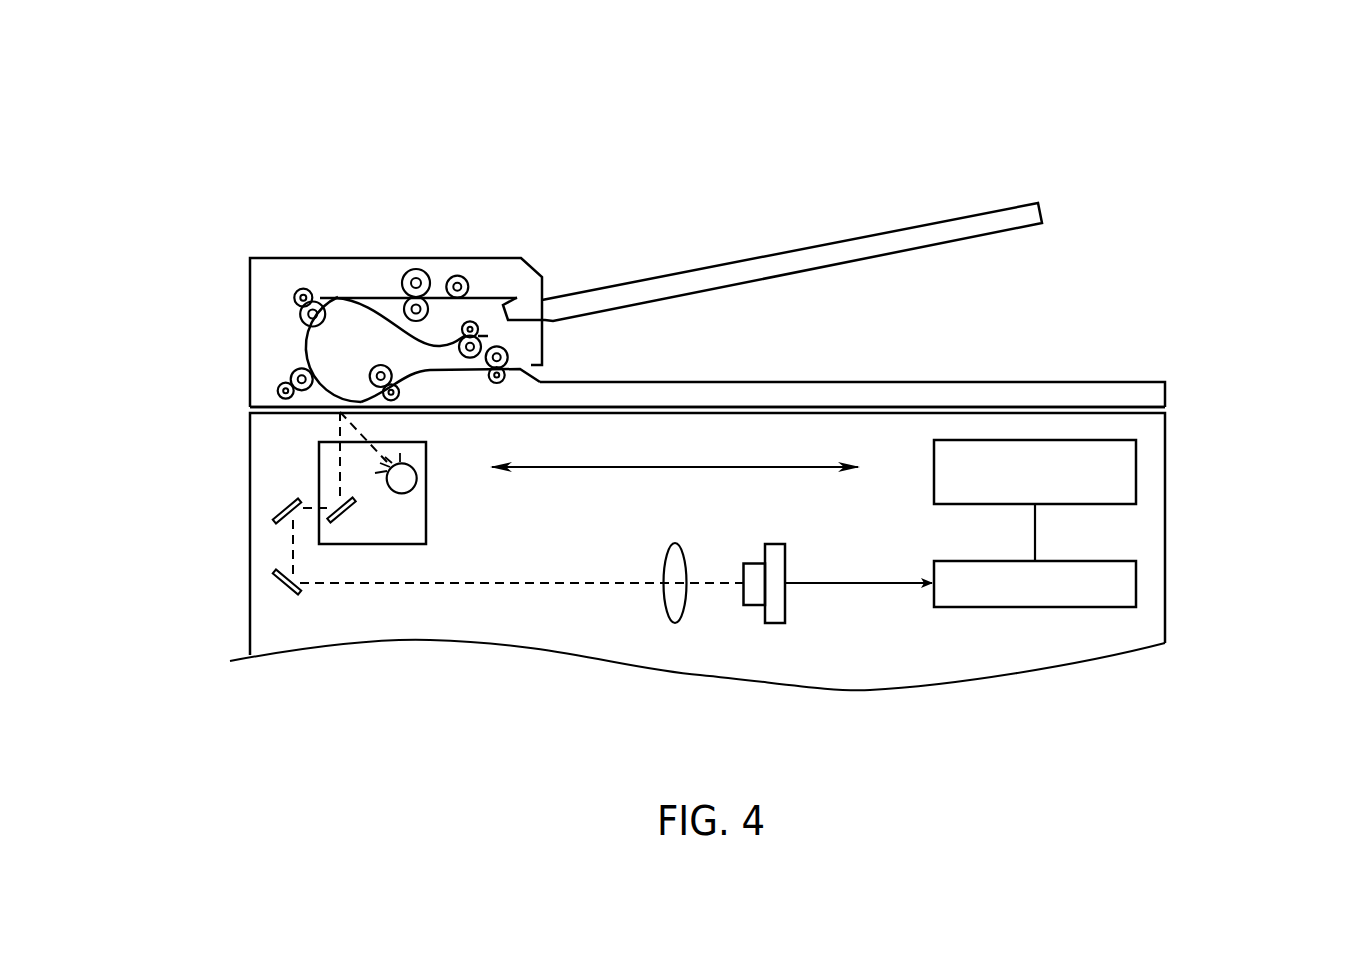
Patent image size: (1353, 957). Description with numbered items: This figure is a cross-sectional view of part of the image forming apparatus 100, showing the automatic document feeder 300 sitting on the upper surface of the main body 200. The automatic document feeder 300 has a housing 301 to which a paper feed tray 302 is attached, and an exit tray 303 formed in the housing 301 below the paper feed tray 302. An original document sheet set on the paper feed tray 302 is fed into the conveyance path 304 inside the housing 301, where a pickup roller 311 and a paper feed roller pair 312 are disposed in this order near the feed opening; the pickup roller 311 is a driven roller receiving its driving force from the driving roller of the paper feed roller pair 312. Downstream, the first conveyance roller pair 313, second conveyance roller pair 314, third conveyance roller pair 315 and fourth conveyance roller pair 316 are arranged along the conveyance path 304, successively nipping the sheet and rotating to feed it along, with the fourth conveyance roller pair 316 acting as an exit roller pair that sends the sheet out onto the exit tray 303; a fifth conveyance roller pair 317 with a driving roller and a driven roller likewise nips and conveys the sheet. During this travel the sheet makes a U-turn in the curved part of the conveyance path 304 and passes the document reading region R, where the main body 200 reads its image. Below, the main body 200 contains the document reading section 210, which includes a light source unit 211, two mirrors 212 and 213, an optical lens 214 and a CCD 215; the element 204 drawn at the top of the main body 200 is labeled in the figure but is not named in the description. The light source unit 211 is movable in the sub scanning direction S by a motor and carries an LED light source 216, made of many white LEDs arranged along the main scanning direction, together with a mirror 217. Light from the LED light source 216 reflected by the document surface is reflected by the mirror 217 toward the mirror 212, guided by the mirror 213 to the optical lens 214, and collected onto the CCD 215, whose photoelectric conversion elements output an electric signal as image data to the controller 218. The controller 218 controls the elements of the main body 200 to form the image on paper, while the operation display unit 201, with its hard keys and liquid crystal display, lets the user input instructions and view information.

The image forming apparatus 100 is at (1143, 160).
The automatic document feeder 300 is at (553, 247).
The housing 301 is at (250, 276).
The paper feed tray 302 is at (1012, 204).
The exit tray 303 is at (1045, 388).
The conveyance path 304 is at (283, 342).
The pickup roller 311 is at (458, 276).
The paper feed roller pair 312 is at (412, 269).
The first conveyance roller pair 313 is at (303, 289).
The second conveyance roller pair 314 is at (278, 392).
The third conveyance roller pair 315 is at (397, 400).
The fourth conveyance roller pair 316 is at (508, 357).
The fifth conveyance roller pair 317 is at (471, 321).
The main body 200 is at (1237, 480).
The operation display unit 201 is at (1137, 463).
The platen glass 204 is at (893, 413).
The document reading section 210 is at (1165, 523).
The light source unit 211 is at (426, 535).
The mirror 212 is at (275, 513).
The mirror 213 is at (275, 580).
The optical lens 214 is at (668, 560).
The charge coupled device (CCD) 215 is at (775, 544).
The LED light source 216 is at (415, 488).
The mirror 217 is at (337, 523).
The controller 218 is at (1137, 587).
The document reading region R is at (325, 418).
The sub scanning direction S is at (557, 470).